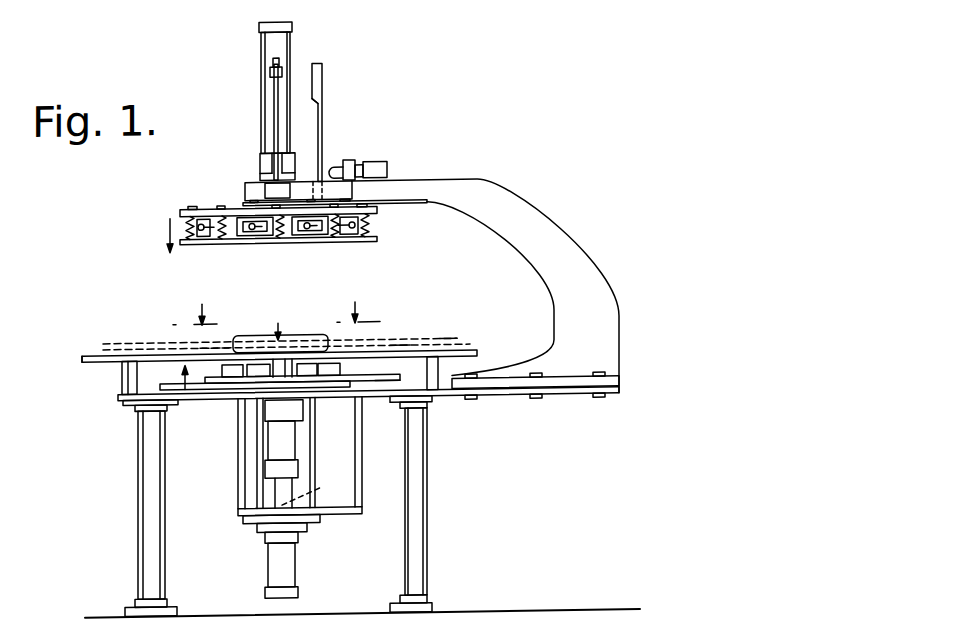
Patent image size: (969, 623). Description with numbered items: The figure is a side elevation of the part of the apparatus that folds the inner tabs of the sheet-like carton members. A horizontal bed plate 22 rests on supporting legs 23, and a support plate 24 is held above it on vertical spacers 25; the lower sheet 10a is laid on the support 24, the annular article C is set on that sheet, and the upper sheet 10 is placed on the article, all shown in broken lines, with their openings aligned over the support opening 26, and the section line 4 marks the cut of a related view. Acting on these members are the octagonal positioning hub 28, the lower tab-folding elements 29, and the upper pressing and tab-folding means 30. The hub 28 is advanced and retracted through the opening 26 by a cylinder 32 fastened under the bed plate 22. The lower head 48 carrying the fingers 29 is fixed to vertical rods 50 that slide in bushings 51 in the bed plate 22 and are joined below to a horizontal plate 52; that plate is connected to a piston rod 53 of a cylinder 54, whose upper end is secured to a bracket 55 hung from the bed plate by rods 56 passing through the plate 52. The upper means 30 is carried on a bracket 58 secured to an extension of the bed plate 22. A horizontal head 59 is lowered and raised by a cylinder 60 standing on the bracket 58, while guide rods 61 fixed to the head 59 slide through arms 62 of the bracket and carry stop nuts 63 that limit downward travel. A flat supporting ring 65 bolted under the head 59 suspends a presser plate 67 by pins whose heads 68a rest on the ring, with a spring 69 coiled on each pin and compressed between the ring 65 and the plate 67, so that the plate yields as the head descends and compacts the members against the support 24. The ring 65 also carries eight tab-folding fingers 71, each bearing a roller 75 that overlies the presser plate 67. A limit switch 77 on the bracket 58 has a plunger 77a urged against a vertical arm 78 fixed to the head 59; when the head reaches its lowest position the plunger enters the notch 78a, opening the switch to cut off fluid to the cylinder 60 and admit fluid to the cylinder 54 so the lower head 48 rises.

The upper sheet member 10 is at (120, 339).
The lower sheet member 10a is at (452, 344).
The annular article C is at (400, 341).
The support plate 24 is at (90, 358).
The vertical spacers 25 is at (125, 374).
The support opening 26 is at (222, 346).
The positioning hub 28 is at (307, 339).
The tab-folding elements 29 is at (340, 369).
The section line 4- 4 is at (276, 311).
The bed plate 22 is at (202, 397).
The supporting legs 23 is at (165, 575).
The pressing and tab-folding means 30 is at (287, 242).
The cylinder 32 is at (283, 442).
The head 48 is at (380, 382).
The vertical rods 50 is at (244, 461).
The bushings 51 is at (338, 398).
The horizontal plate 52 is at (337, 513).
The piston rod 53 is at (315, 490).
The cylinder 54 is at (287, 569).
The bracket 55 is at (250, 522).
The rods 56 is at (262, 486).
The bracket 58 is at (582, 264).
The head 59 is at (240, 199).
The cylinder 60 is at (262, 91).
The guide rods 61 is at (276, 114).
The arms 62 is at (262, 179).
The stop nuts 63 is at (270, 67).
The supporting ring 65 is at (182, 210).
The presser plate 67 is at (232, 241).
The pin heads 68a is at (190, 204).
The spring 69 is at (280, 231).
The tab-folding fingers 71 is at (262, 232).
The roller 75 is at (201, 231).
The limit switch 77 is at (354, 161).
The plunger 77a is at (330, 165).
The vertical arm 78 is at (323, 65).
The notch 78a is at (320, 100).